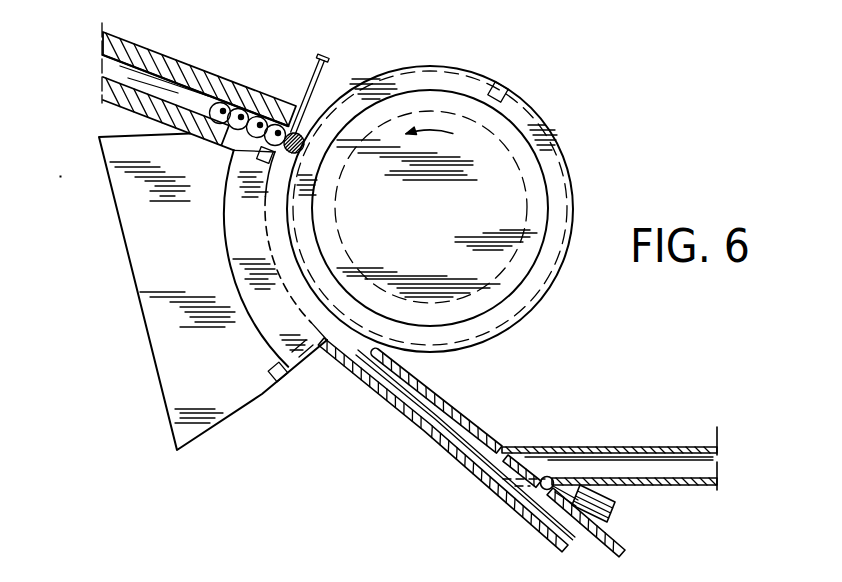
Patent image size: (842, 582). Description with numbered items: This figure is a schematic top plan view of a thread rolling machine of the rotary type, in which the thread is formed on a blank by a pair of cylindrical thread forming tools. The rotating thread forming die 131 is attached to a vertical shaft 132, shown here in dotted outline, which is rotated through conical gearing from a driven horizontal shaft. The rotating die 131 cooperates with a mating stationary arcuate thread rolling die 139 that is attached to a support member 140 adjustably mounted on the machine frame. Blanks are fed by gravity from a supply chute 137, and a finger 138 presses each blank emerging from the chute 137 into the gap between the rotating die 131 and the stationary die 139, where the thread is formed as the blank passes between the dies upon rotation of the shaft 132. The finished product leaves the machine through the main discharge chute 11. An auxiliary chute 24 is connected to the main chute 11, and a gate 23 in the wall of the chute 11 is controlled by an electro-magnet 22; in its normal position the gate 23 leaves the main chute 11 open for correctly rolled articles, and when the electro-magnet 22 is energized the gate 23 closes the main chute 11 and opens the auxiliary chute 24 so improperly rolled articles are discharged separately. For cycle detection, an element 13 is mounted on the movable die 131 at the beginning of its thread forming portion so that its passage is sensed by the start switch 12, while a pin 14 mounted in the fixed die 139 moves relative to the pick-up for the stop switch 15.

The main discharge chute 11 is at (453, 405).
The EPD start switch 12 is at (258, 158).
The element 13 is at (500, 85).
The pin 14 is at (308, 343).
The stop switch 15 is at (285, 384).
The electro-magnet 22 is at (618, 508).
The gate 23 is at (528, 468).
The auxiliary chute 24 is at (637, 447).
The thread forming die 131 is at (543, 122).
The vertical shaft 132 is at (528, 208).
The supply chute 137 is at (203, 82).
The finger 138 is at (327, 75).
The arcuate thread rolling die 139 is at (247, 235).
The support member 140 is at (165, 315).